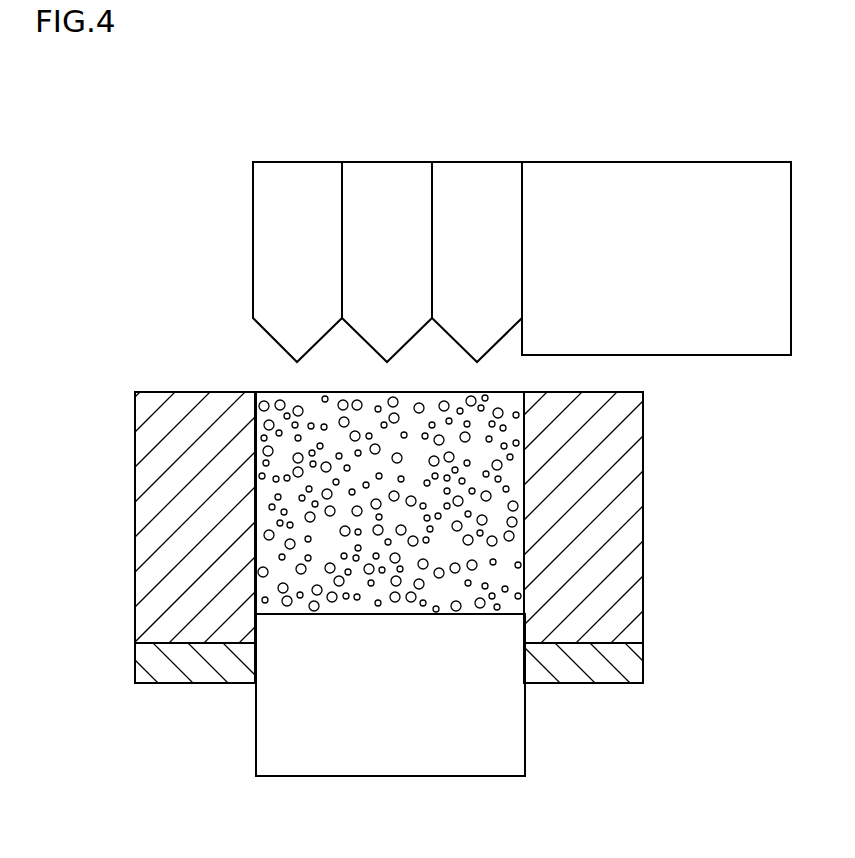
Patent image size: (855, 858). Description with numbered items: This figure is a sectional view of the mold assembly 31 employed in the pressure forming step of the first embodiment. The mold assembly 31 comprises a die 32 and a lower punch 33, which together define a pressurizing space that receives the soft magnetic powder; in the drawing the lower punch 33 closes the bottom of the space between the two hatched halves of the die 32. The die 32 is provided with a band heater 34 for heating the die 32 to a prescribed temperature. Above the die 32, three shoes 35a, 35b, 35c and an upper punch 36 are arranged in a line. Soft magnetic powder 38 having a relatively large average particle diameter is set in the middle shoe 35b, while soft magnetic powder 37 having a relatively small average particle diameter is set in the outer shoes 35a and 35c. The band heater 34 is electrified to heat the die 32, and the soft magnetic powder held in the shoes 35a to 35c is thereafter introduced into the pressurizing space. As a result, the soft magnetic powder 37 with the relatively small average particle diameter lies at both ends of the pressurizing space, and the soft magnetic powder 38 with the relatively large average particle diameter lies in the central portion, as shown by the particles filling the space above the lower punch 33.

The mold assembly 31 is at (137, 152).
The die 32 is at (598, 503).
The lower punch 33 is at (482, 728).
The band heater 34 is at (160, 663).
The shoe 35a is at (297, 185).
The shoe 35b is at (387, 185).
The shoe 35c is at (477, 185).
The upper punch 36 is at (662, 183).
The soft magnetic powder 37 is at (272, 430).
The soft magnetic powder 38 is at (387, 518).